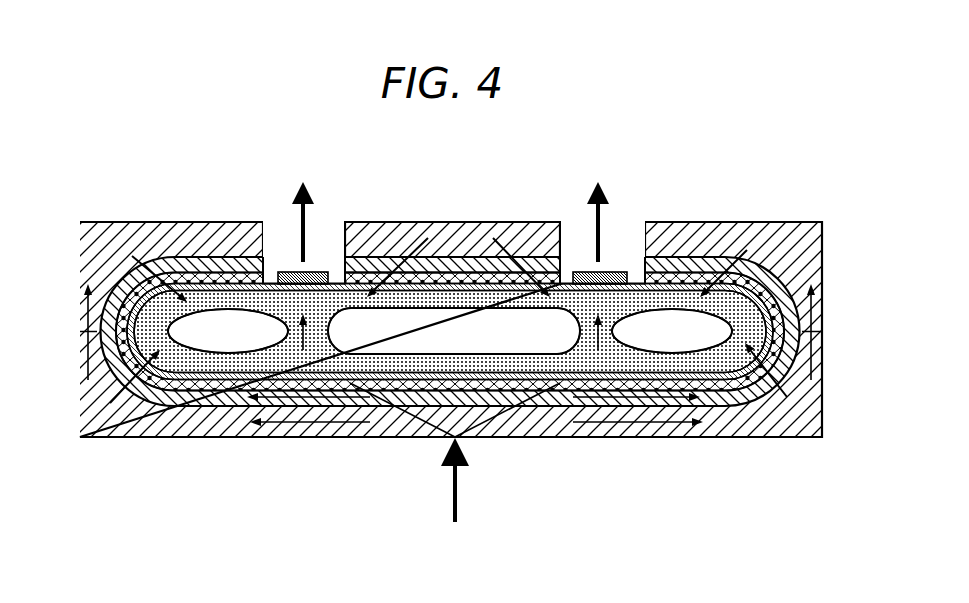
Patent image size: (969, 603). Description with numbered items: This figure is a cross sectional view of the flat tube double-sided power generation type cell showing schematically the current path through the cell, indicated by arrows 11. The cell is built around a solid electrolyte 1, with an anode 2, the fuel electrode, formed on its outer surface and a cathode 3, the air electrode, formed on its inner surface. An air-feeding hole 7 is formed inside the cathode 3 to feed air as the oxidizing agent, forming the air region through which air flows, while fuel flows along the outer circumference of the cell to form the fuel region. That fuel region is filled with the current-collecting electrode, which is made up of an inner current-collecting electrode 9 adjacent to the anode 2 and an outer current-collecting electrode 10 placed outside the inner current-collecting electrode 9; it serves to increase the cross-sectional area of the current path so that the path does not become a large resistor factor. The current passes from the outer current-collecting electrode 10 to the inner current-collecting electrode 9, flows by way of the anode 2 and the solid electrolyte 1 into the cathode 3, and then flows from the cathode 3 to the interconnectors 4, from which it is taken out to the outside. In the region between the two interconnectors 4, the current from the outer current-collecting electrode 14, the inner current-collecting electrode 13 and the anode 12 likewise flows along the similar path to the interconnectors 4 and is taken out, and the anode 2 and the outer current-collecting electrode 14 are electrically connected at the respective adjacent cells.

The solid electrolyte 1 is at (218, 405).
The anode 2 is at (173, 405).
The cathode 3 is at (288, 393).
The interconnector 4 is at (625, 270).
The air-feeding hole 7 is at (567, 336).
The inner current-collecting electrode 9 is at (198, 260).
The outer current-collecting electrode 10 is at (103, 233).
The arrows 11 is at (455, 495).
The anode 12 is at (365, 283).
The inner current-collecting electrode 13 is at (448, 266).
The outer current-collecting electrode 14 is at (525, 236).